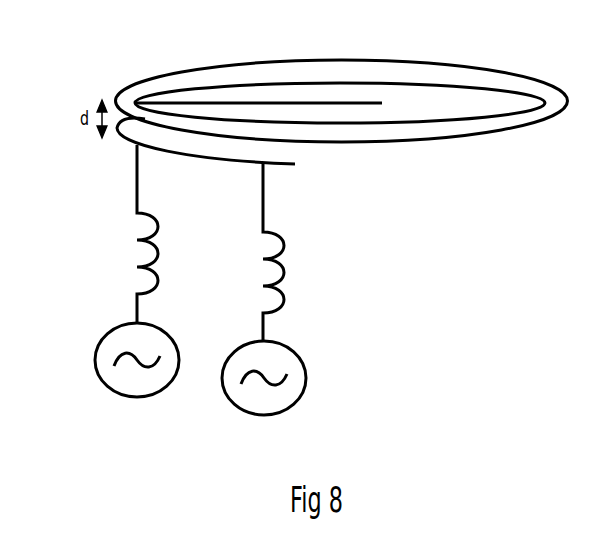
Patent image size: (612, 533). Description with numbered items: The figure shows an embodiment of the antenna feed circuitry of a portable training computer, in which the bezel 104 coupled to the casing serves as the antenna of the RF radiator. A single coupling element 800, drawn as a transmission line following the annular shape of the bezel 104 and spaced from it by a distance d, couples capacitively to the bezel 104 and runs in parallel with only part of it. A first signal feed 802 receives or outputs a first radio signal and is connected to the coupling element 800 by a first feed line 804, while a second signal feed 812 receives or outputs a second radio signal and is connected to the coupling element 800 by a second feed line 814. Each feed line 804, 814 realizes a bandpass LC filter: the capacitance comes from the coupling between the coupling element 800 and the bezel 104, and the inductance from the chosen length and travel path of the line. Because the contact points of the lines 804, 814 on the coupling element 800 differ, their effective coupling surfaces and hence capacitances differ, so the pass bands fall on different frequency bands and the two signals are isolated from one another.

The bezel 104 is at (188, 68).
The coupling element 800 is at (120, 140).
The first signal feed 802 is at (97, 350).
The first feed line 804 is at (137, 270).
The second signal feed 812 is at (227, 368).
The second feed line 814 is at (263, 287).